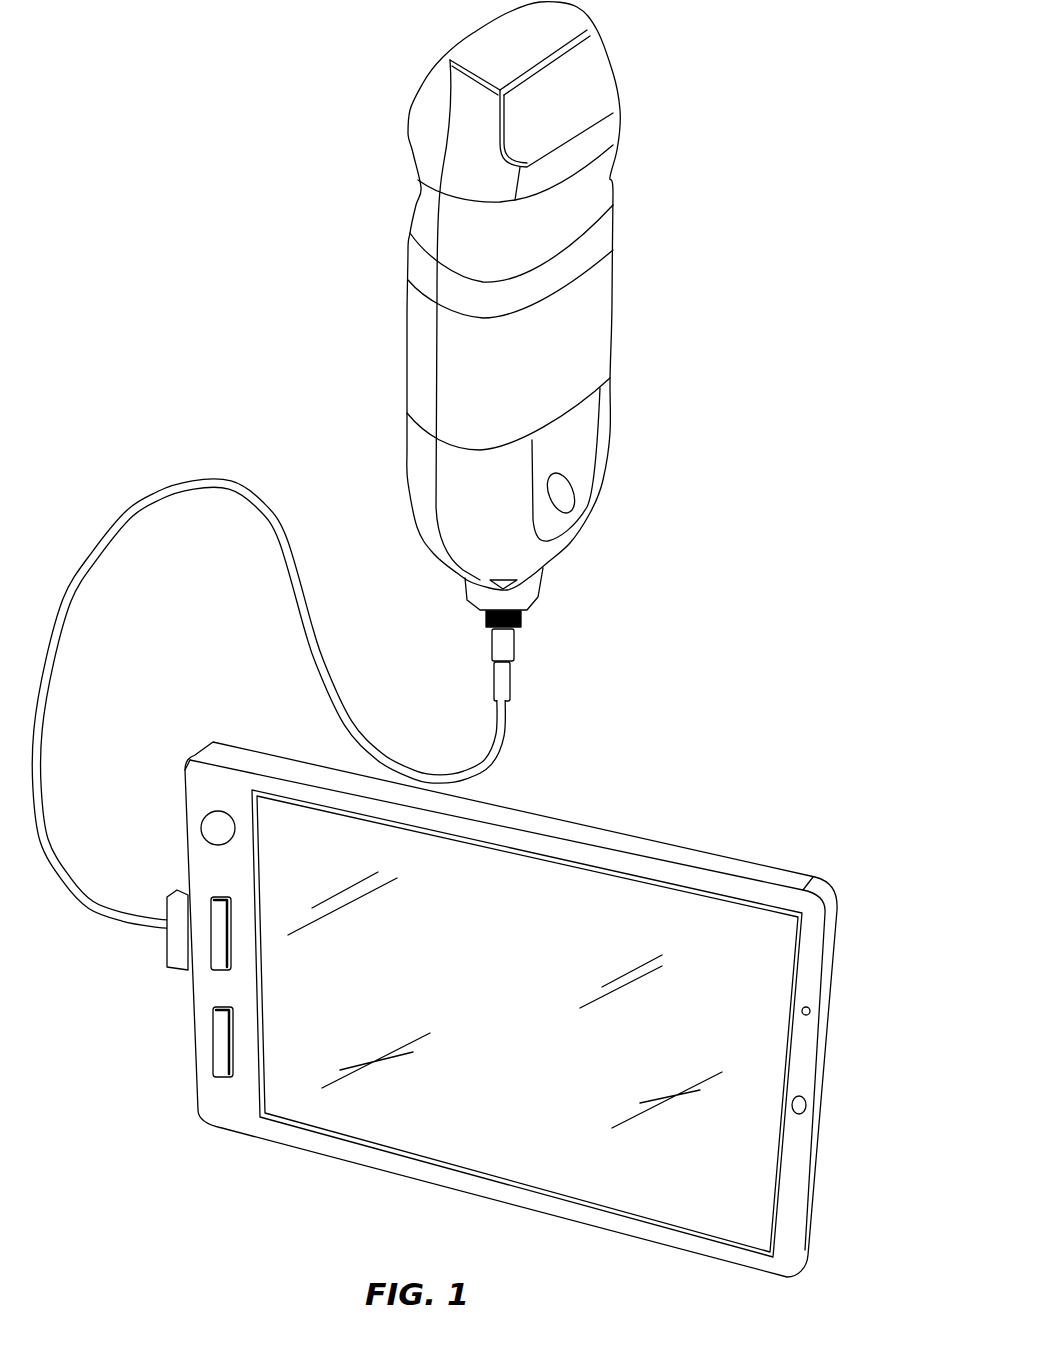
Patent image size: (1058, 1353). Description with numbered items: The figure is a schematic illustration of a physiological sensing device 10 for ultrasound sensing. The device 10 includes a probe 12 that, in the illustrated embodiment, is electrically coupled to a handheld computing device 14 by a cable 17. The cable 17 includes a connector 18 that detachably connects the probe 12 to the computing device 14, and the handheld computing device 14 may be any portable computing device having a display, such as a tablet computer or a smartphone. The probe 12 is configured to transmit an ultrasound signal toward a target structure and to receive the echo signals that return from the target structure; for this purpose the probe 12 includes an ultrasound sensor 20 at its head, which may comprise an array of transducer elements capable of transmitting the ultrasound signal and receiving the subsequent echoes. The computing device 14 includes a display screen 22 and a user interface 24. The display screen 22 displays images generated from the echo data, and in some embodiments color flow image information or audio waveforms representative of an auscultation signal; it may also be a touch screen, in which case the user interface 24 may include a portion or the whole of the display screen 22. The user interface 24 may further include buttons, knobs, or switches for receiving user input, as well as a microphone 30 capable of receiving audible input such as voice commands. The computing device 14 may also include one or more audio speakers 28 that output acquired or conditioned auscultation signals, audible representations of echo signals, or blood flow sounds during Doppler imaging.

The physiological sensing device 10 is at (840, 293).
The probe 12 is at (596, 322).
The handheld computing device 14 is at (690, 850).
The cable 17 is at (220, 484).
The connector 18 is at (167, 946).
The ultrasound sensor 20 is at (537, 37).
The display screen 22 is at (522, 1031).
The user interface 24 is at (223, 1044).
The audio speaker 28 is at (807, 1112).
The microphone 30 is at (811, 1012).